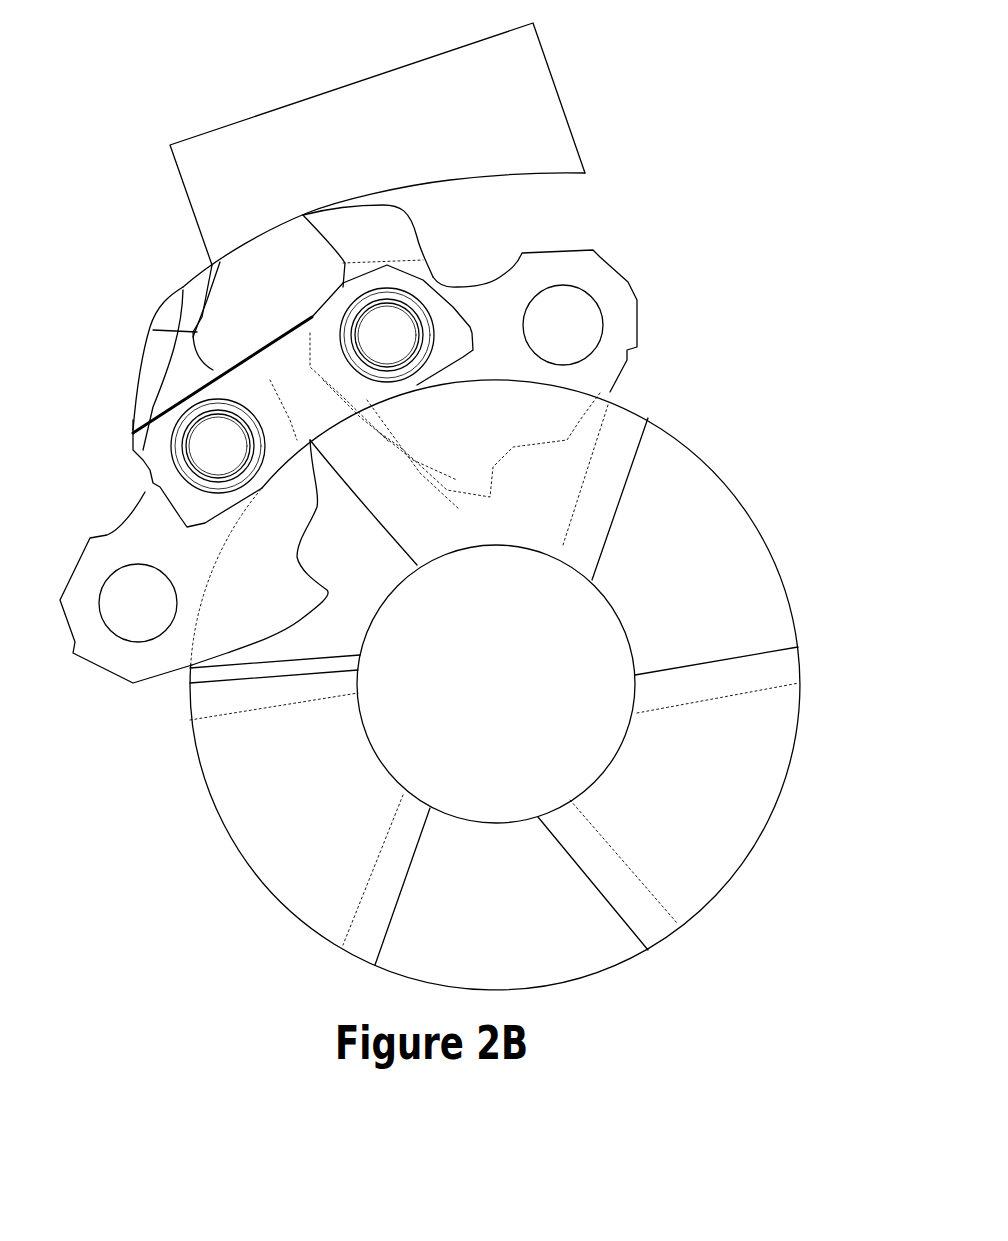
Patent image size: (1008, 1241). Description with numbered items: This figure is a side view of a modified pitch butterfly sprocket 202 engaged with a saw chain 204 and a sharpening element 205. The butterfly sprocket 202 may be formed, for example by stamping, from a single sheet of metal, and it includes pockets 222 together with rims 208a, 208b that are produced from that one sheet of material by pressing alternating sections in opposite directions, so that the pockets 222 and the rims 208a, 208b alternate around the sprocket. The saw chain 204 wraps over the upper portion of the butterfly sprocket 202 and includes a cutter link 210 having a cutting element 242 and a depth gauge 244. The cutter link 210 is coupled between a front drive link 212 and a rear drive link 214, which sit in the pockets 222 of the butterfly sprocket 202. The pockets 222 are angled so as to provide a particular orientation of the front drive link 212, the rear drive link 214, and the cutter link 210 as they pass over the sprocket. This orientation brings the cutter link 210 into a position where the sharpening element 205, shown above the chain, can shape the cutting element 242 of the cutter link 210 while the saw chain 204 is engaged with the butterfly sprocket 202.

The butterfly sprocket 202 is at (722, 928).
The saw chain 204 is at (125, 315).
The sharpening element 205 is at (350, 128).
The rim 208a is at (772, 828).
The rim 208b is at (760, 522).
The cutter link 210 is at (270, 366).
The front drive link 212 is at (613, 313).
The rear drive link 214 is at (172, 653).
The pocket 222 is at (657, 527).
The cutting element 242 is at (187, 283).
The depth gauge 244 is at (350, 217).